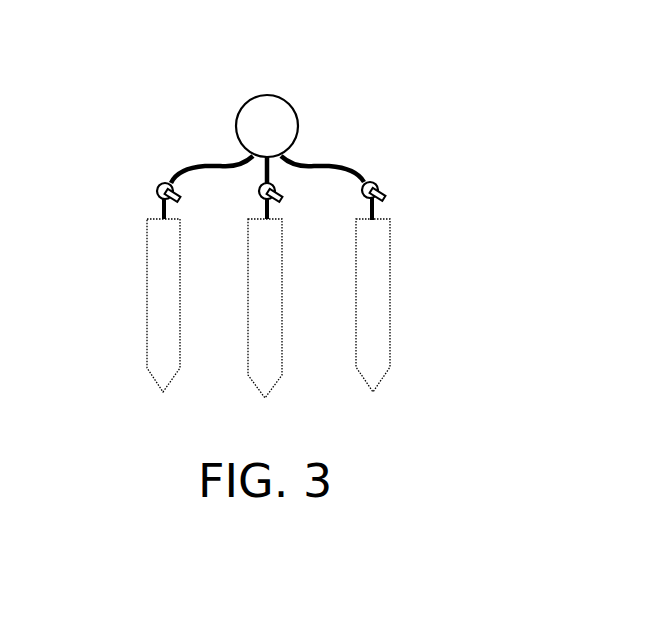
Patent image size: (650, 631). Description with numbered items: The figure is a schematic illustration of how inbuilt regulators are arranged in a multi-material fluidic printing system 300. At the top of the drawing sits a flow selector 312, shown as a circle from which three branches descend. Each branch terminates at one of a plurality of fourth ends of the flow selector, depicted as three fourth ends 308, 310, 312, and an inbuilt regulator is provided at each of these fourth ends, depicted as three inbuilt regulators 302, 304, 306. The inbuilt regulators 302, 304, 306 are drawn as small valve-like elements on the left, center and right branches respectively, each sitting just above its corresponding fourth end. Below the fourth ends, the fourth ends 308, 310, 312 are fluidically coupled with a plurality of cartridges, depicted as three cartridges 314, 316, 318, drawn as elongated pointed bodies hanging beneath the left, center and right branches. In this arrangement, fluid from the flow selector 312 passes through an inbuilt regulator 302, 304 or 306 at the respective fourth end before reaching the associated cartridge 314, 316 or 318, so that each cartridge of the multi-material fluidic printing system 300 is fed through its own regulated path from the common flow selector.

The multi-material fluidic printing system 300 is at (429, 57).
The inbuilt regulator 302 is at (125, 173).
The inbuilt regulator 304 is at (239, 220).
The inbuilt regulator 306 is at (415, 177).
The fourth end 308 is at (117, 201).
The fourth end 310 is at (307, 212).
The flow selector 312 is at (247, 138).
The cartridge 314 is at (116, 305).
The cartridge 316 is at (237, 308).
The cartridge 318 is at (418, 305).